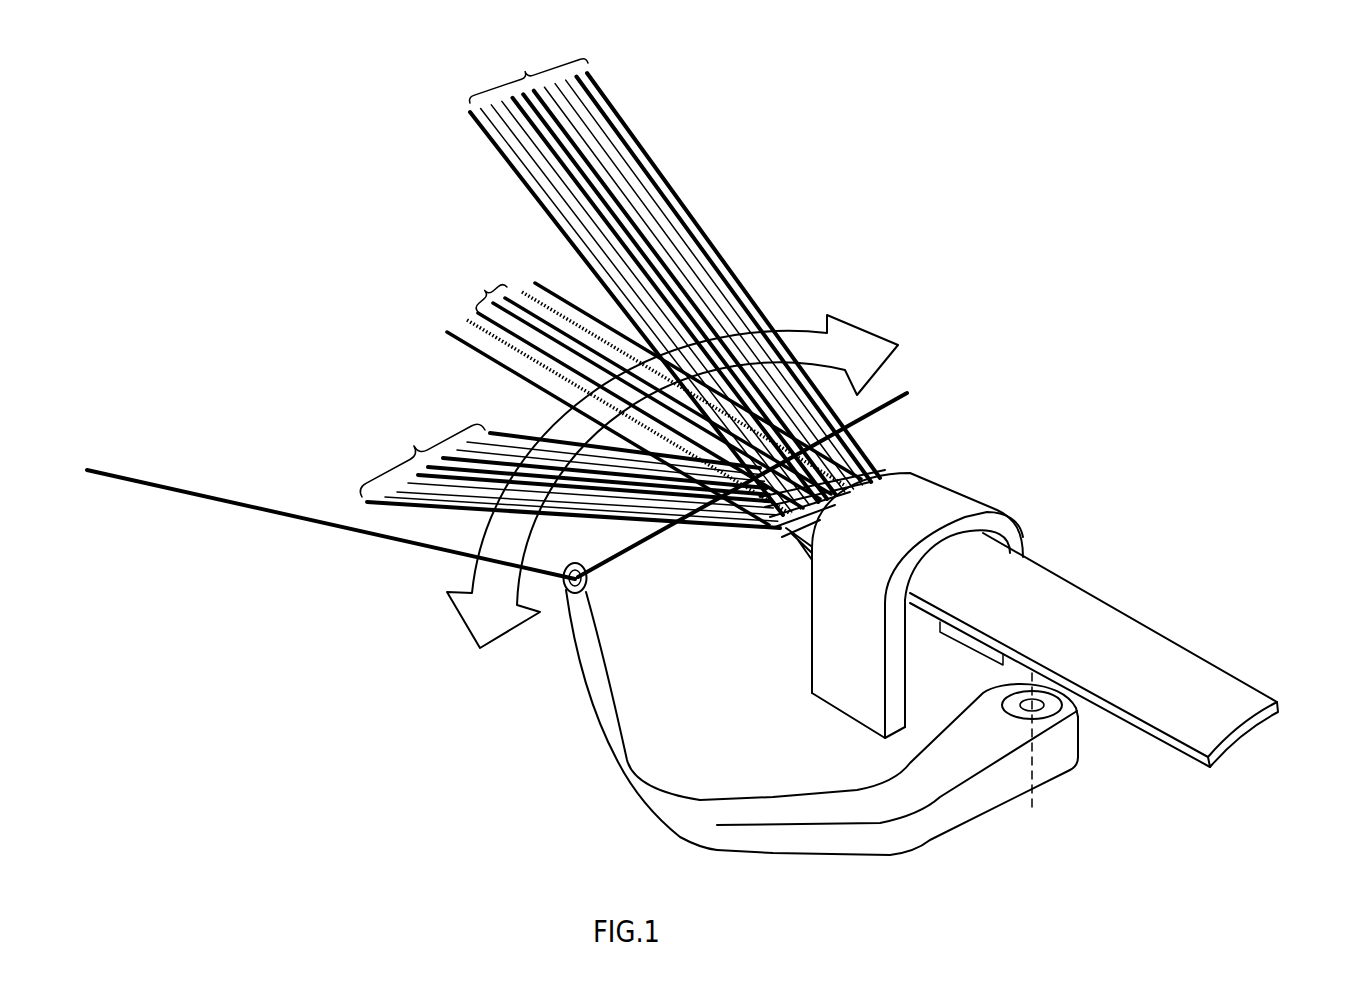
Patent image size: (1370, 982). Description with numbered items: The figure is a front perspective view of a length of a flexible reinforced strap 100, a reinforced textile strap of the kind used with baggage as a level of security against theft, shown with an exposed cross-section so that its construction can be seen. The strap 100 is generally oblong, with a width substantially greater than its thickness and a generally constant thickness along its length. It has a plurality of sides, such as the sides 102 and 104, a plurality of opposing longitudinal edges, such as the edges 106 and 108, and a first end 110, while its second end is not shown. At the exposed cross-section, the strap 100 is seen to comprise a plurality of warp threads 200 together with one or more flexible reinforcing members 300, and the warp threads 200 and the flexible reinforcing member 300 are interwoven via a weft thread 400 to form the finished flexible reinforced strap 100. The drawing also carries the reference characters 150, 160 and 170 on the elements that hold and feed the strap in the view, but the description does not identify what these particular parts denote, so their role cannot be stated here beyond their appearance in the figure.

The flexible reinforced strap 100 is at (1037, 555).
The side 102 is at (1131, 691).
The side 104 is at (1188, 758).
The longitudinal edge 106 is at (1152, 627).
The longitudinal edge 108 is at (1125, 720).
The first end 110 is at (1250, 725).
The arm 150 is at (593, 715).
The base 160 is at (848, 838).
The rotation arrow 170 is at (872, 320).
The warp threads 200 is at (518, 63).
The flexible reinforcing member 300 is at (515, 285).
The weft thread 400 is at (173, 495).